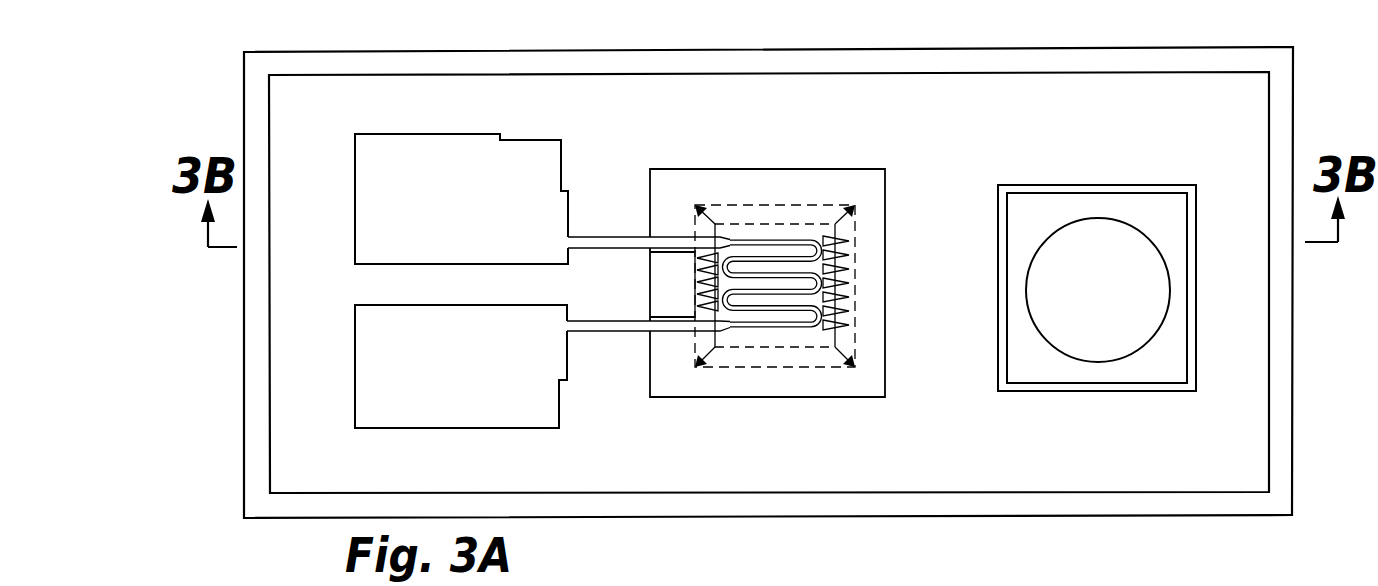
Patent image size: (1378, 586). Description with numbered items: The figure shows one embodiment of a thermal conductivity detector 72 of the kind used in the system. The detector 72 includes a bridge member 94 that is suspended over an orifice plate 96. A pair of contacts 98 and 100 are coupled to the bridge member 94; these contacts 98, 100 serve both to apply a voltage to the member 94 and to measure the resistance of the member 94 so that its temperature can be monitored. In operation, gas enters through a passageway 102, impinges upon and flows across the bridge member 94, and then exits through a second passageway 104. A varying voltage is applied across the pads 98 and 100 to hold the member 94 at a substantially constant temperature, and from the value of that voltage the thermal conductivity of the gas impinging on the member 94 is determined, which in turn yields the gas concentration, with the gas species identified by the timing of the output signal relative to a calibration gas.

The thermal conductivity detector 72 is at (993, 38).
The bridge member 94 is at (777, 257).
The orifice plate 96 is at (870, 308).
The contact 98 is at (360, 178).
The contact 100 is at (368, 375).
The passageway 102 is at (780, 317).
The passageway 104 is at (1121, 309).